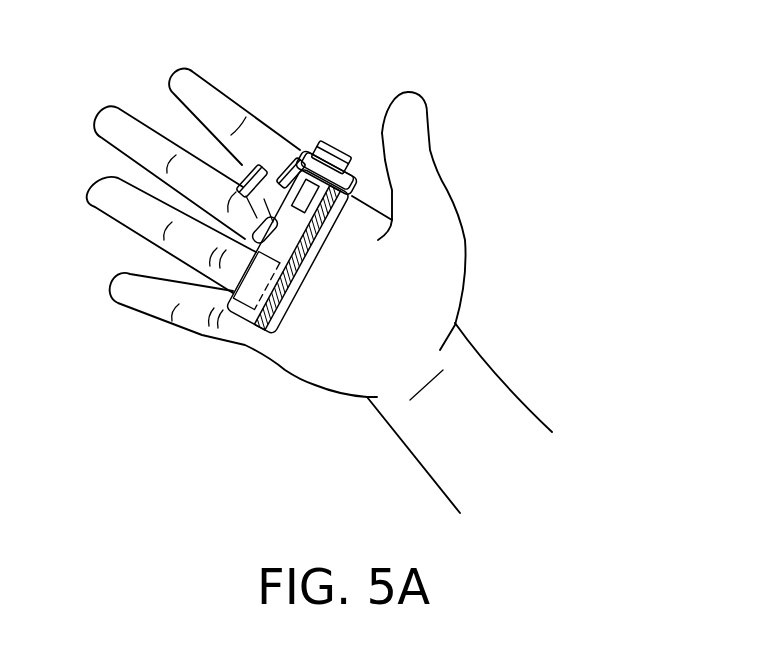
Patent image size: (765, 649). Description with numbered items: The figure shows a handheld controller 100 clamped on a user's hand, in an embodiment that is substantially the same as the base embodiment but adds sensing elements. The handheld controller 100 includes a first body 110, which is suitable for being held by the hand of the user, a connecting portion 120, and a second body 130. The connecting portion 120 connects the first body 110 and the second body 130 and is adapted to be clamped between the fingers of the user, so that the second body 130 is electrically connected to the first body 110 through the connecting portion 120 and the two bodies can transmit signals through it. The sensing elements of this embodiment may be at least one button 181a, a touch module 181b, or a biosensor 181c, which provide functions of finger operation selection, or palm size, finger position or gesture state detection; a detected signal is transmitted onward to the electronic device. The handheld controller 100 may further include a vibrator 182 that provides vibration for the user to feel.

The handheld controller 100 is at (336, 256).
The first body 110 is at (352, 172).
The connecting portion 120 is at (243, 172).
The second body 130 is at (233, 170).
The button 181a is at (268, 165).
The touch module 181b is at (279, 311).
The biosensor 181c is at (341, 148).
The vibrator 182 is at (230, 318).